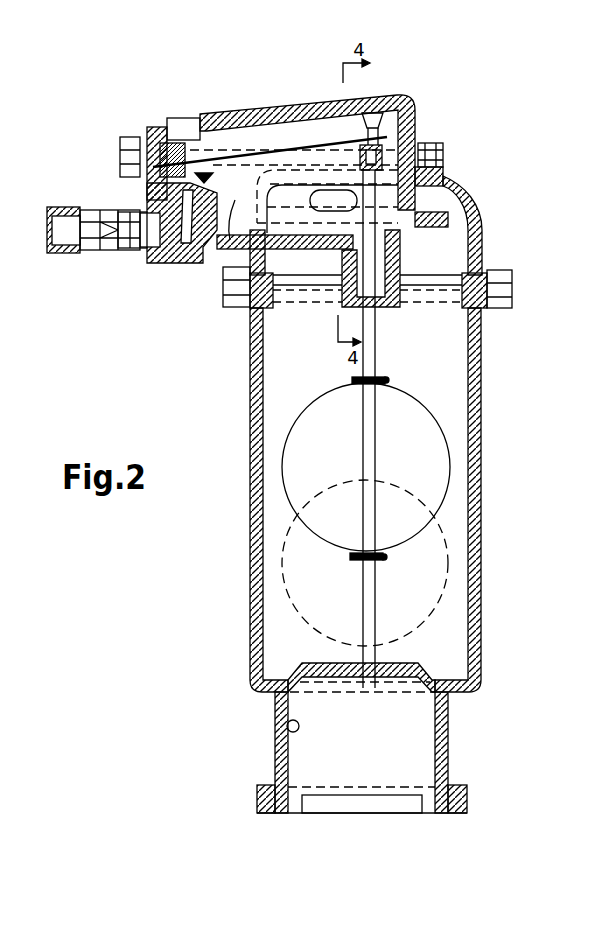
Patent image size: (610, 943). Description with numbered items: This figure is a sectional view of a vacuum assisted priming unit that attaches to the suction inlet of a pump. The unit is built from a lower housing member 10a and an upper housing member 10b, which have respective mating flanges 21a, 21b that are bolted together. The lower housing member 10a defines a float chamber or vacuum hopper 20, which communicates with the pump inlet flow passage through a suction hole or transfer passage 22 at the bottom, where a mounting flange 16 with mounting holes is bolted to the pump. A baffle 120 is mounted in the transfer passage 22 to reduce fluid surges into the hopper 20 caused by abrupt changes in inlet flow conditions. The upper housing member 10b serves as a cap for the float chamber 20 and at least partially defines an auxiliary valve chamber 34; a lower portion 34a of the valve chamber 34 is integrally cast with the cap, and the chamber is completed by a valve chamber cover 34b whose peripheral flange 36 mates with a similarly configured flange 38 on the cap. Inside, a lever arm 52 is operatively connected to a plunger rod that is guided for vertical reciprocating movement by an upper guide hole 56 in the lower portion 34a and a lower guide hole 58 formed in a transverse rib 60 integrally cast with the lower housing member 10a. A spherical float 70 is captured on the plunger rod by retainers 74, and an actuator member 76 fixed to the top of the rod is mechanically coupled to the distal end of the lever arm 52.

The lower housing member 10a is at (478, 494).
The upper housing member 10b is at (487, 226).
The mounting flange 16 is at (467, 801).
The float chamber 20 is at (282, 388).
The mating flange 21a is at (512, 303).
The mating flange 21b is at (512, 287).
The transfer passage 22 is at (278, 731).
The auxiliary valve chamber 34 is at (237, 236).
The lower portion of valve chamber 34a is at (450, 248).
The valve chamber cover 34b is at (285, 103).
The peripheral flange 36 is at (418, 145).
The flange 38 is at (442, 173).
The lever arm 52 is at (328, 149).
The upper guide hole 56 is at (382, 310).
The lower guide hole 58 is at (364, 668).
The transverse rib 60 is at (413, 663).
The spherical float 70 is at (407, 443).
The retainers 74 is at (385, 381).
The actuator member 76 is at (380, 127).
The baffle 120 is at (392, 800).